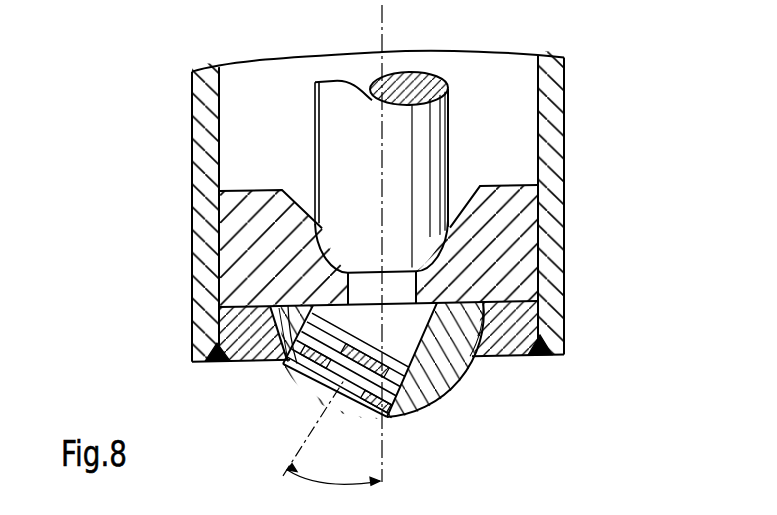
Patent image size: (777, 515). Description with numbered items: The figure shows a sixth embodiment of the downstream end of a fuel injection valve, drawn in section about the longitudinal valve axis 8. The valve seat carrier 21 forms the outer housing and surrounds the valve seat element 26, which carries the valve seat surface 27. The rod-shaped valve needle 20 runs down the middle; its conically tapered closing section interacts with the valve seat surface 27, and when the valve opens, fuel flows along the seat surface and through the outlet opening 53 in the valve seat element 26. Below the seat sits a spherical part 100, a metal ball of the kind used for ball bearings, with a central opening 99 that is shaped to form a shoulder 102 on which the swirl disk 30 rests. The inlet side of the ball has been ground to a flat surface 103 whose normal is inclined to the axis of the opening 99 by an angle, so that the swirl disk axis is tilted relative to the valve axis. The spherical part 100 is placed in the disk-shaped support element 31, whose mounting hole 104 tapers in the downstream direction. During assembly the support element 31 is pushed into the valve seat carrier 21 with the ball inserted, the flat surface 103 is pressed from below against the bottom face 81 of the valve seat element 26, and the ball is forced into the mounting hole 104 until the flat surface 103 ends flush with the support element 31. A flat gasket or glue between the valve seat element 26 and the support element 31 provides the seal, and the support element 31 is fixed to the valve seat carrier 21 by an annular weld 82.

The longitudinal valve axis 8 is at (382, 17).
The valve needle 20 is at (433, 121).
The valve seat carrier 21 is at (550, 106).
The valve seat element 26 is at (513, 222).
The valve seat surface 27 is at (305, 216).
The swirl disk 30 is at (401, 420).
The support element 31 is at (518, 345).
The outlet opening 53 is at (352, 276).
The bottom face 81 is at (478, 362).
The annular weld 82 is at (215, 362).
The opening 99 is at (450, 388).
The spherical part 100 is at (445, 397).
The shoulder 102 is at (283, 353).
The flat surface 103 is at (481, 290).
The mounting hole 104 is at (214, 339).